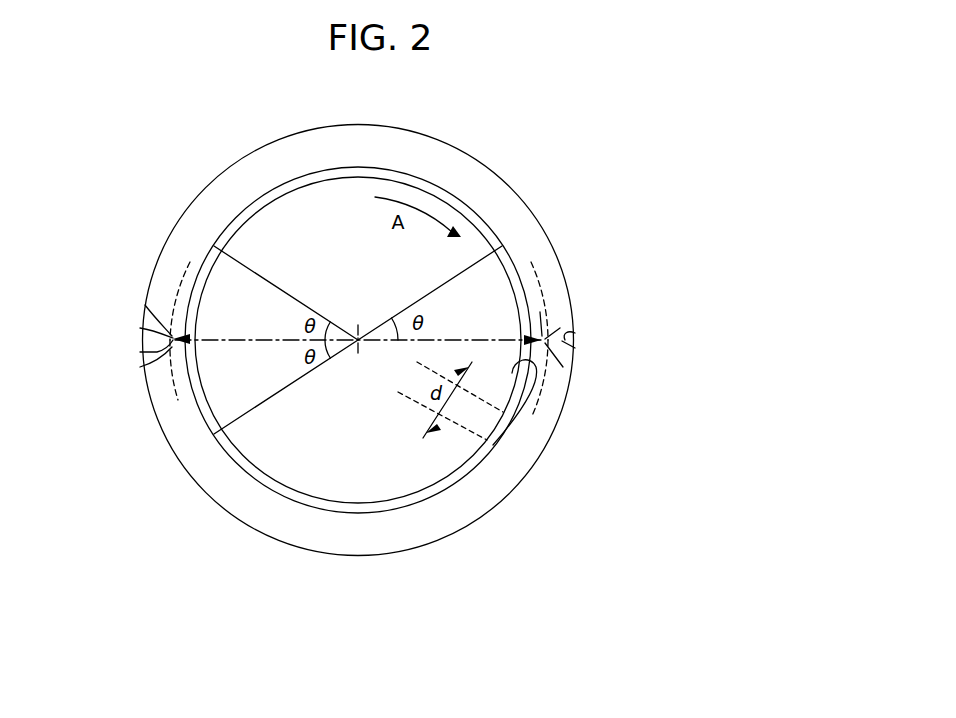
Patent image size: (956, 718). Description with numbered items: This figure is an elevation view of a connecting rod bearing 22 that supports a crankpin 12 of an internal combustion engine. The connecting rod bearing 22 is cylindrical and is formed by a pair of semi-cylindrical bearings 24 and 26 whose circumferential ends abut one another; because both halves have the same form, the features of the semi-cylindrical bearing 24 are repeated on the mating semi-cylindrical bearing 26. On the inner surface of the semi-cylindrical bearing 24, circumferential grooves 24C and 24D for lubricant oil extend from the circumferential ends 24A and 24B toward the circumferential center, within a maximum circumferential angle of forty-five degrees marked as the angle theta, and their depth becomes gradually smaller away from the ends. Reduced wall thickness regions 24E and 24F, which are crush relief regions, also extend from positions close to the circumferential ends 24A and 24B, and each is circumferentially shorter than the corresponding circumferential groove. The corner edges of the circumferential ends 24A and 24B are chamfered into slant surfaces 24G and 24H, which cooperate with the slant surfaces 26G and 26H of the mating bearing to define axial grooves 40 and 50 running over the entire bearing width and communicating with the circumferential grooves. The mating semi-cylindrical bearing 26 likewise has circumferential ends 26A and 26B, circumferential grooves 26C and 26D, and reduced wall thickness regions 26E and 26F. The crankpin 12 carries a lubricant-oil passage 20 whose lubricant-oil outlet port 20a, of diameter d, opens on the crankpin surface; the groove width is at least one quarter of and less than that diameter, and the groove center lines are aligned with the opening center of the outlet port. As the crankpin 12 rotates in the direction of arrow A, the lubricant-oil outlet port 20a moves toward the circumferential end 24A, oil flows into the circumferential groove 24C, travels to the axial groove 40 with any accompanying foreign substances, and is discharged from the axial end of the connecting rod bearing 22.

The crankpin 12 is at (332, 455).
The lubricant-oil passage 20 is at (417, 408).
The lubricant-oil outlet port 20a is at (487, 440).
The connecting rod bearing 22 is at (565, 160).
The semi-cylindrical bearing 24 is at (425, 527).
The circumferential end 24A is at (170, 337).
The circumferential end 24B is at (565, 340).
The circumferential groove 24C is at (178, 402).
The circumferential groove 24D is at (538, 397).
The reduced wall thickness region 24E is at (193, 356).
The reduced wall thickness region 24F is at (520, 380).
The slant surface 24G is at (177, 352).
The slant surface 24H is at (545, 343).
The semi-cylindrical bearing 26 is at (459, 150).
The circumferential end 26A is at (178, 343).
The circumferential end 26B is at (562, 341).
The circumferential groove 26C is at (190, 262).
The circumferential groove 26D is at (531, 262).
The reduced wall thickness region 26E is at (187, 309).
The reduced wall thickness region 26F is at (540, 312).
The slant surface 26G is at (172, 336).
The slant surface 26H is at (545, 339).
The axial groove 40 is at (197, 338).
The axial groove 50 is at (530, 337).